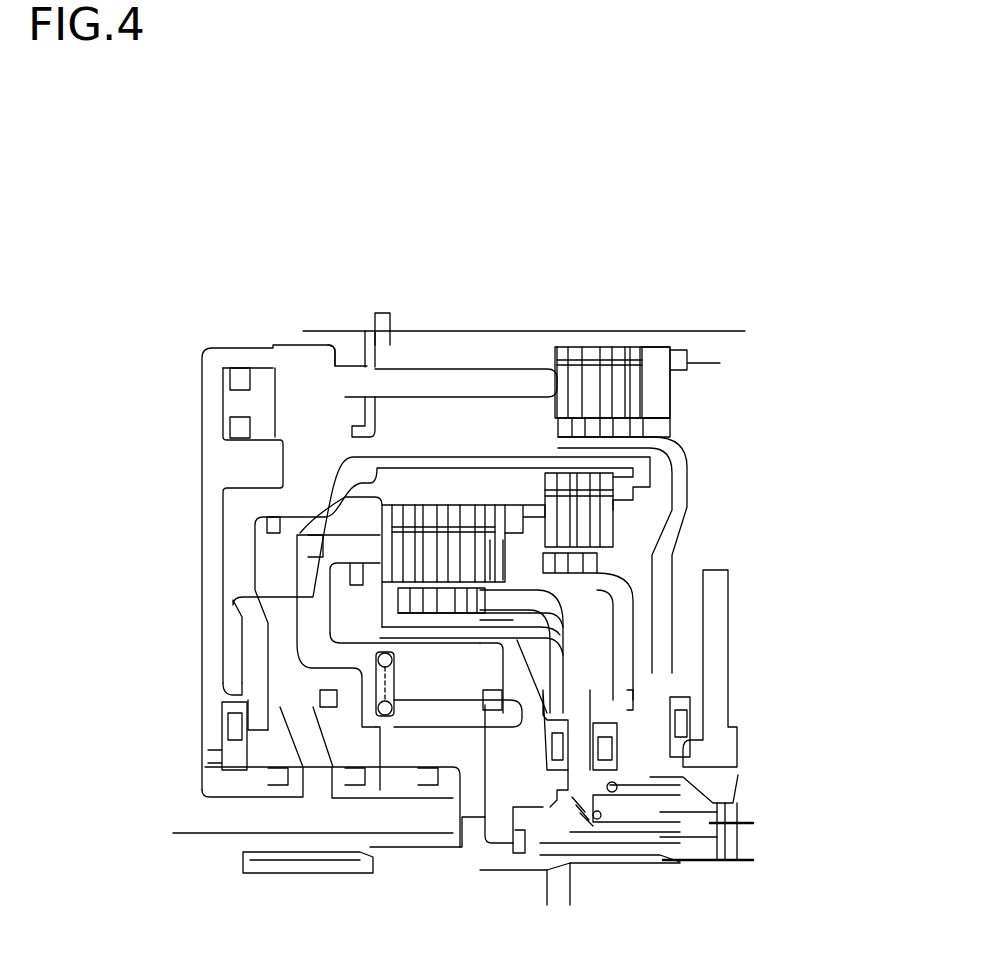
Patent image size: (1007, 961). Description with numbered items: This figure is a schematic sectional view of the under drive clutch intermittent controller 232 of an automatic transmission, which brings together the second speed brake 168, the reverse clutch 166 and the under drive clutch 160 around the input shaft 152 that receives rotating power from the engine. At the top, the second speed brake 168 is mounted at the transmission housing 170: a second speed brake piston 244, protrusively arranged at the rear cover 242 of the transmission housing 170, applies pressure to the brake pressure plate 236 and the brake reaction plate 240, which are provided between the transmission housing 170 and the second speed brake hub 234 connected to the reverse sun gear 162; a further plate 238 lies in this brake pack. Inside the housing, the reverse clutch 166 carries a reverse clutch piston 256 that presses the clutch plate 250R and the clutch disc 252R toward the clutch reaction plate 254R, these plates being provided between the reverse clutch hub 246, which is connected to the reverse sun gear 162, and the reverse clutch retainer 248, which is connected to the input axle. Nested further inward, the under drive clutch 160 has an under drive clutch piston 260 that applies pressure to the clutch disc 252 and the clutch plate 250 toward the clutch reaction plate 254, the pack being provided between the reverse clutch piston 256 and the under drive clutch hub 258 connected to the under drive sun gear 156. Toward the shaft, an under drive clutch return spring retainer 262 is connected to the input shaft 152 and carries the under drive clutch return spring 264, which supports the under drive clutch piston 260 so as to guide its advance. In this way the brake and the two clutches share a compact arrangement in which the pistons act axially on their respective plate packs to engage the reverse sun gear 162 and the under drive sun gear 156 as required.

The input shaft 152 is at (502, 882).
The under drive sun gear 156 is at (710, 860).
The under drive clutch 160 is at (358, 604).
The reverse sun gear 162 is at (700, 803).
The reverse clutch 166 is at (645, 523).
The second speed brake 168 is at (666, 328).
The transmission housing 170 is at (747, 326).
The under drive clutch intermittent controller 232 is at (786, 306).
The second speed brake hub 234 is at (663, 592).
The brake pressure plate 236 is at (570, 385).
The separator plate 238 is at (607, 387).
The brake reaction plate 240 is at (663, 385).
The rear cover 242 is at (215, 467).
The second speed brake piston 244 is at (258, 404).
The reverse clutch hub 246 is at (560, 697).
The reverse clutch retainer 248 is at (247, 569).
The clutch plate 250 is at (397, 547).
The clutch plate 250R is at (545, 527).
The clutch disc 252 is at (417, 537).
The clutch disc 252R is at (550, 507).
The clutch reaction plate 254 is at (487, 540).
The clutch reaction plate 254R is at (577, 513).
The reverse clutch piston 256 is at (287, 622).
The under drive clutch hub 258 is at (650, 698).
The under drive clutch piston 260 is at (313, 645).
The under drive clutch return spring retainer 262 is at (340, 742).
The under drive clutch return spring 264 is at (380, 660).